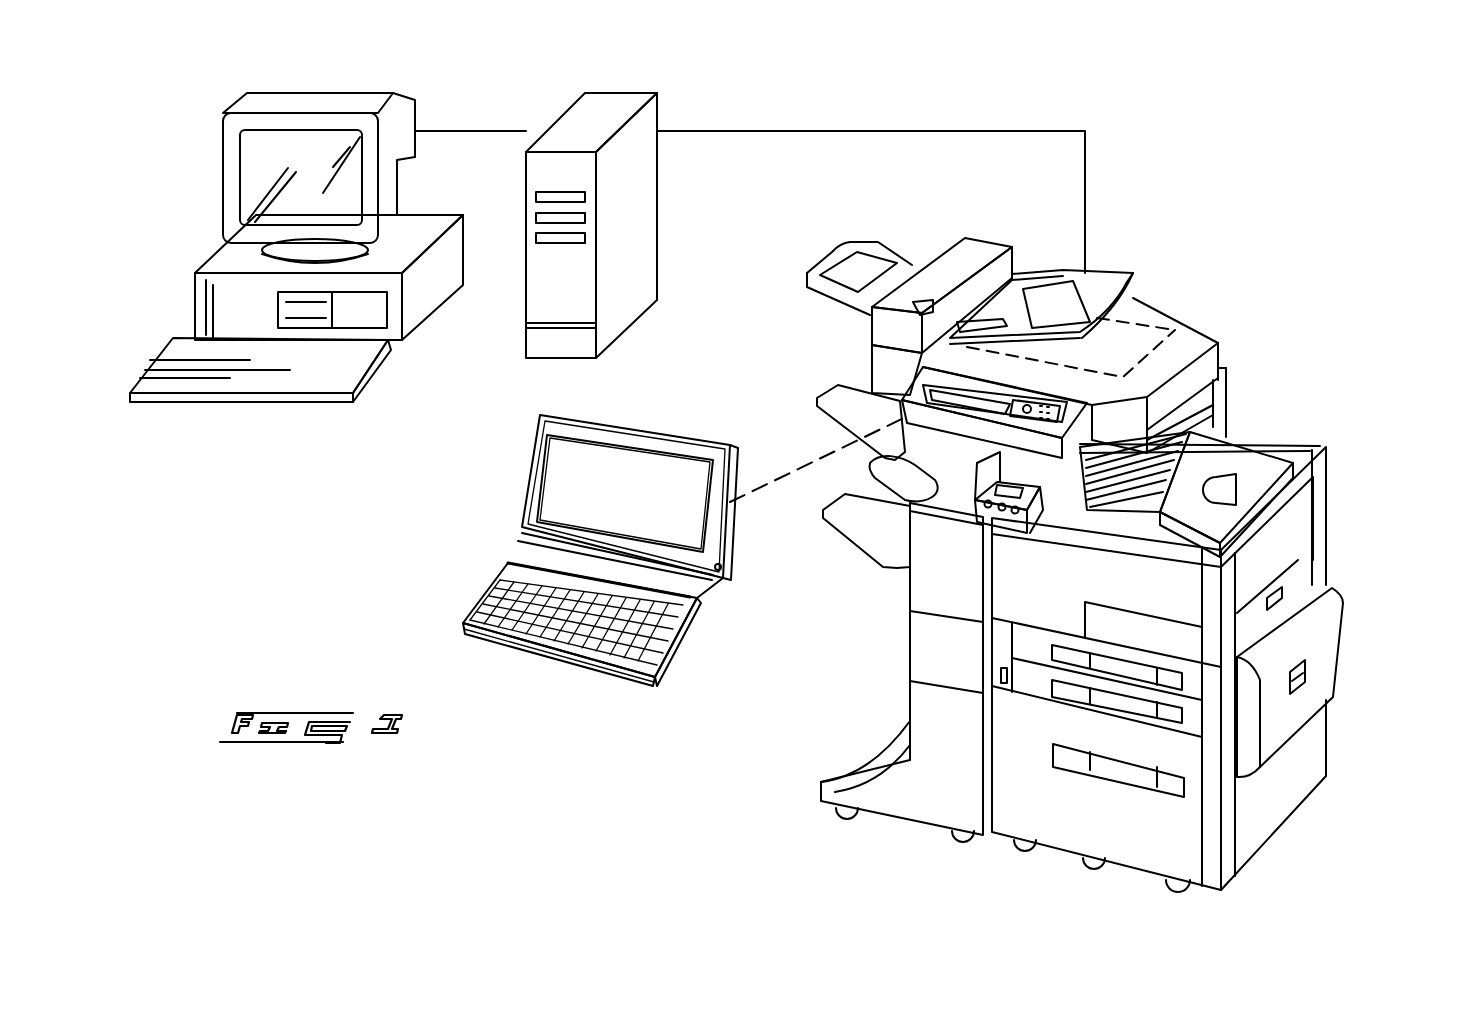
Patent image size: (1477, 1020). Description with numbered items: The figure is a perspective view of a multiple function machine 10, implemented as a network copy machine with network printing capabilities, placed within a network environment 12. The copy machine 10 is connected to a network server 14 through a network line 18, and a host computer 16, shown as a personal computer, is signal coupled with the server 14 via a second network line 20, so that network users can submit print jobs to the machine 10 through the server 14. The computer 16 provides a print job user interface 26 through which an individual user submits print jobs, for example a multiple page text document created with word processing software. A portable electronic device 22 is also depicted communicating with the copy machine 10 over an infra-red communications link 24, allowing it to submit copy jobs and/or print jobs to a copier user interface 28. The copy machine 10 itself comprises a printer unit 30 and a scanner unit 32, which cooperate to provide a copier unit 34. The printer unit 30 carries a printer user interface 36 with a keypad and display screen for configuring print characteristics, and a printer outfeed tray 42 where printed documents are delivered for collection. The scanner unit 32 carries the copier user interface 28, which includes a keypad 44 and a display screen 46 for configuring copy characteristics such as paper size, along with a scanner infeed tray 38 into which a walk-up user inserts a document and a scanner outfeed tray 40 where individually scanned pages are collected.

The multiple function machine 10 is at (1131, 542).
The network environment 12 is at (291, 358).
The network server 14 is at (682, 91).
The host computer 16 is at (243, 430).
The network line 18 is at (862, 131).
The network line 20 is at (476, 131).
The portable electronic device 22 is at (538, 680).
The infra-red communications link 24 is at (773, 477).
The print job user interface 26 is at (255, 172).
The copier user interface 28 is at (964, 421).
The printer unit 30 is at (1344, 563).
The scanner unit 32 is at (1167, 293).
The copier unit 34 is at (1244, 357).
The printer user interface 36 is at (992, 518).
The scanner infeed tray 38 is at (1022, 297).
The scanner outfeed tray 40 is at (908, 263).
The printer outfeed tray 42 is at (1137, 489).
The keypad 44 is at (1112, 396).
The display screen 46 is at (1005, 398).